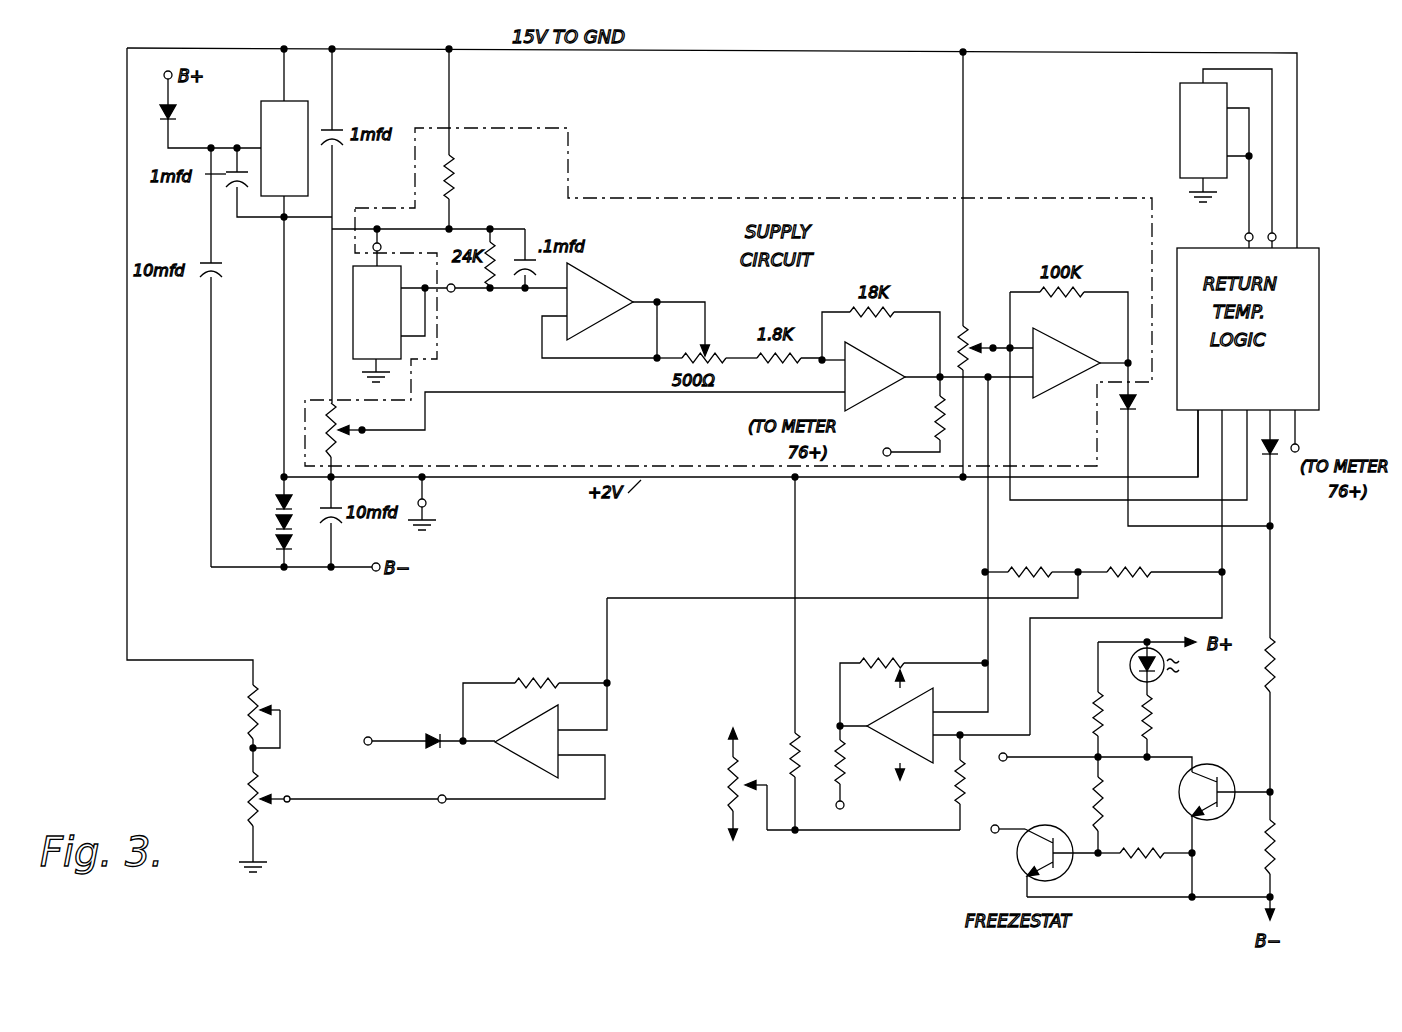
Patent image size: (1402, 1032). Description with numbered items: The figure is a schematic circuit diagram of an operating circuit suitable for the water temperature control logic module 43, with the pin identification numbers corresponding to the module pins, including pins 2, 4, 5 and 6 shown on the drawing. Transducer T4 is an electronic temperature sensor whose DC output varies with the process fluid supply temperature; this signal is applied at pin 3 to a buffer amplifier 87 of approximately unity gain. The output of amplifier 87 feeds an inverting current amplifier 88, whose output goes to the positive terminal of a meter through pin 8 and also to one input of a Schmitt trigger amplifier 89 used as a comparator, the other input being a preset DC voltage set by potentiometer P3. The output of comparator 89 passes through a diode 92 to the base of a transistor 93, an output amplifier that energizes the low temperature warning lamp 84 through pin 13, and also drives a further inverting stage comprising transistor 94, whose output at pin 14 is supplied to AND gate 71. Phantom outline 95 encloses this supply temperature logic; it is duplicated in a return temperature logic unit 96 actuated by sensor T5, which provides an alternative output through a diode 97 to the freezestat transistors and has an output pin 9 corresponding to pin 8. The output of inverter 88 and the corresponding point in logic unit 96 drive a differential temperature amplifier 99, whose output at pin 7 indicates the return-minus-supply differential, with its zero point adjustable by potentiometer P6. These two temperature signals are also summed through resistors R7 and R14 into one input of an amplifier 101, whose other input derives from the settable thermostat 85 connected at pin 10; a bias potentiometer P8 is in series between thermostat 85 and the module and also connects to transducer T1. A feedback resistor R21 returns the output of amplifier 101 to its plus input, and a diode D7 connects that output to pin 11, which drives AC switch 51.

The buffer amplifier 87 is at (612, 274).
The inverting current amplifier 88 is at (905, 362).
The Schmitt trigger amplifier 89 is at (1074, 343).
The diode 92 is at (1137, 403).
The transistor 93 is at (1221, 770).
The transistor 94 is at (1068, 832).
The process fluid supply temperature logic 95 is at (888, 180).
The process fluid return temperature logic unit 96 is at (1194, 415).
The diode 97 is at (1274, 460).
The differential temperature amplifier circuit 99 is at (857, 696).
The amplifier 101 is at (528, 768).
The water temperature control logic module 43 is at (478, 747).
The settable thermostat 85 is at (265, 812).
The low temperature indicator lamp 84 is at (1046, 788).
The AND gate 71 is at (940, 871).
The AC switch 51 is at (349, 769).
The potentiometer P3 is at (961, 328).
The potentiometer P6 is at (725, 760).
The bias potentiometer P8 is at (262, 694).
The resistor R7 is at (1010, 565).
The resistor R14 is at (1128, 568).
The feedback resistor R21 is at (521, 694).
The diode D7 is at (434, 735).
The transducer T1 is at (284, 148).
The transducer T4 is at (377, 313).
The sensor T5 is at (1203, 130).
The terminal 2 is at (384, 247).
The pin 3 is at (451, 298).
The terminal 4 is at (1278, 231).
The terminal 5 is at (1241, 231).
The terminal 6 is at (425, 502).
The pin 7 is at (849, 771).
The pin 8 is at (912, 416).
The pin 9 is at (1302, 431).
The pin 10 is at (435, 811).
The pin 11 is at (365, 730).
The pin 13 is at (1091, 751).
The pin 14 is at (1004, 816).